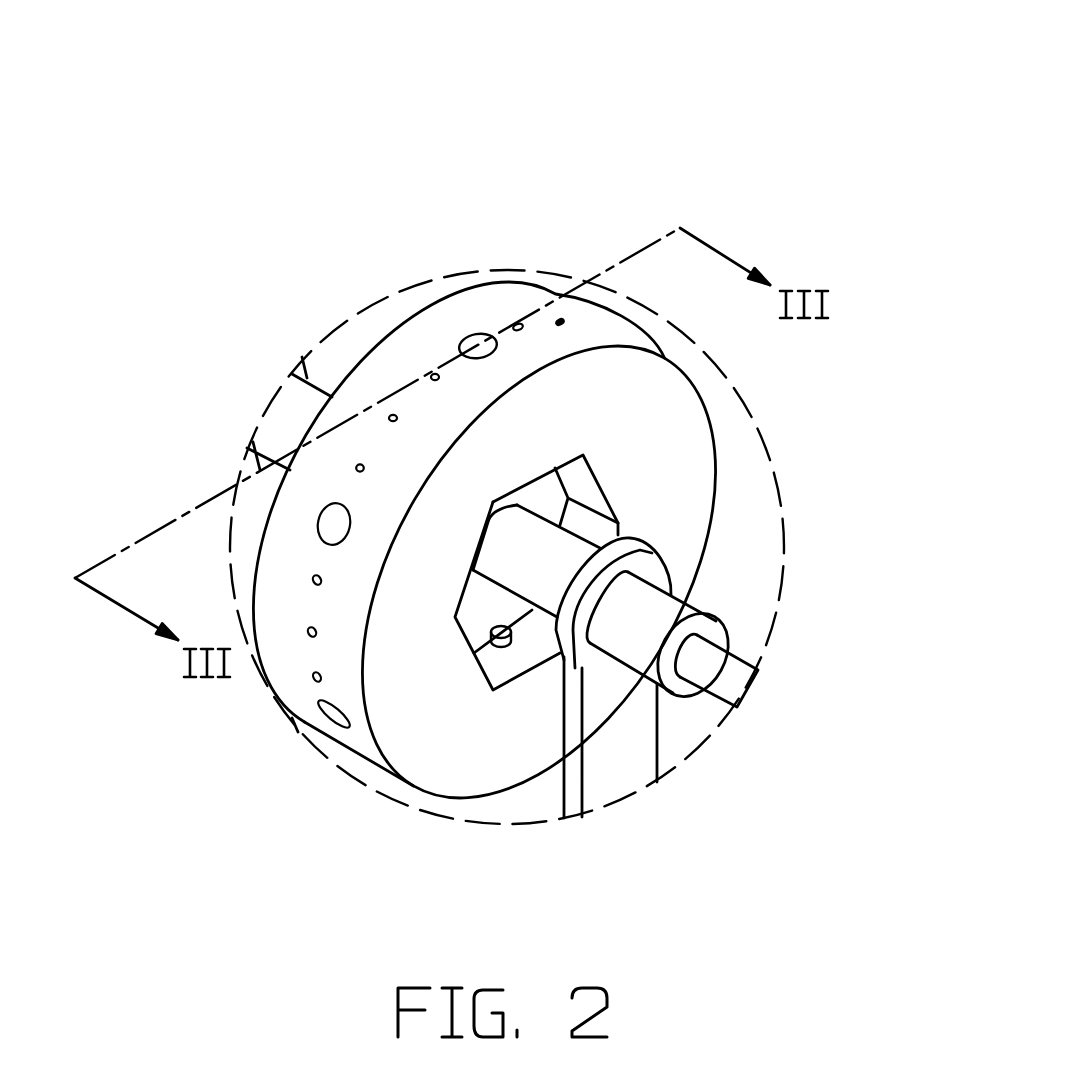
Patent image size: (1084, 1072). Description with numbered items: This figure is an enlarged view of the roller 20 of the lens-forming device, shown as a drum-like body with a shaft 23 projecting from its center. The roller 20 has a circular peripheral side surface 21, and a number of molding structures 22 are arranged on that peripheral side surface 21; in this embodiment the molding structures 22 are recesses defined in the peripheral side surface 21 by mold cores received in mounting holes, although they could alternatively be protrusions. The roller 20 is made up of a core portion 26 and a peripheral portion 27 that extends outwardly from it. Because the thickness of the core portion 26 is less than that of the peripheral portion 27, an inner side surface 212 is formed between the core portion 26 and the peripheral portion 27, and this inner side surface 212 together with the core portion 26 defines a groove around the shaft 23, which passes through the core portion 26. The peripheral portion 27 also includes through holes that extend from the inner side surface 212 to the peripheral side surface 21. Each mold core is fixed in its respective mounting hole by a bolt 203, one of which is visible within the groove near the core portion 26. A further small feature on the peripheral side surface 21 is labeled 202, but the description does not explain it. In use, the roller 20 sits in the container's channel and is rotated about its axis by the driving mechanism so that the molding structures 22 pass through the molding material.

The roller 20 is at (507, 418).
The peripheral side surface 21 is at (582, 325).
The molding structures 22 is at (473, 336).
The shaft 23 is at (652, 610).
The core portion 26 is at (543, 502).
The peripheral portion 27 is at (690, 478).
The through hole 202 is at (391, 415).
The bolt 203 is at (497, 655).
The inner side surface 212 is at (582, 480).